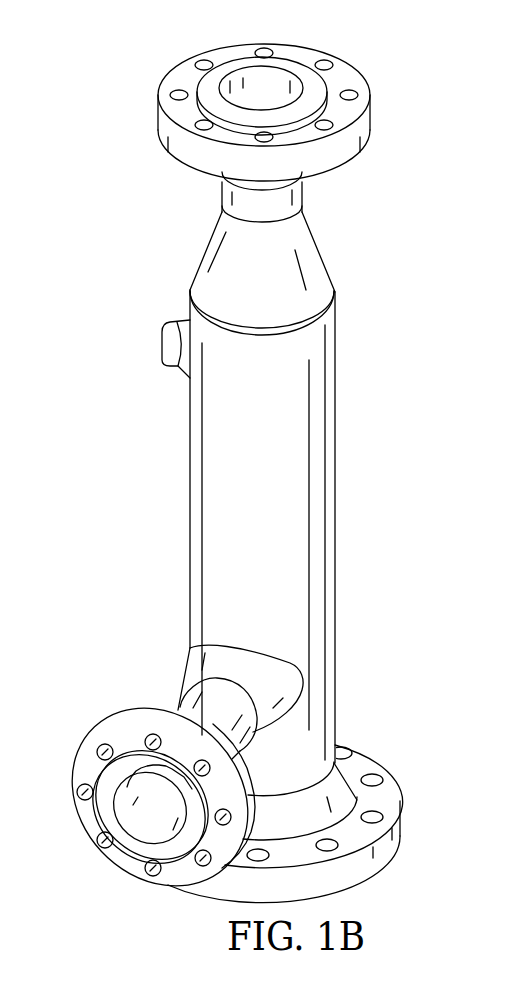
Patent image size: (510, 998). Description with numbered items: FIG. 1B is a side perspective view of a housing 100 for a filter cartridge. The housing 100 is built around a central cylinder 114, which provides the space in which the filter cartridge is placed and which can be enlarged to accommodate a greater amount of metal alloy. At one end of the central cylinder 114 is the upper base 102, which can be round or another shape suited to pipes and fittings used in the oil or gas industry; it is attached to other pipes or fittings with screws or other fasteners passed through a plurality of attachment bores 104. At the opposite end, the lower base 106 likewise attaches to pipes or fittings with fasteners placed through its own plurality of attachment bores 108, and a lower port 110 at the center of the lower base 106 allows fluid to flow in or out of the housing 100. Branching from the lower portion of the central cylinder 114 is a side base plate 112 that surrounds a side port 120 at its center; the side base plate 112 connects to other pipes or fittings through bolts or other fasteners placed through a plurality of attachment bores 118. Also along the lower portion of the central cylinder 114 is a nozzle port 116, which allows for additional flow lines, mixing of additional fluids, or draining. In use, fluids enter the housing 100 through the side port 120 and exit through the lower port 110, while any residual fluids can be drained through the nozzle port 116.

The housing 100 is at (213, 462).
The upper base 102 is at (357, 868).
The attachment bores 104 is at (377, 768).
The lower base 106 is at (343, 75).
The attachment bores 108 is at (176, 86).
The lower port 110 is at (276, 84).
The side base plate 112 is at (138, 714).
The central cylinder 114 is at (190, 532).
The nozzle port 116 is at (168, 350).
The attachment bores 118 is at (78, 800).
The side port 120 is at (148, 828).